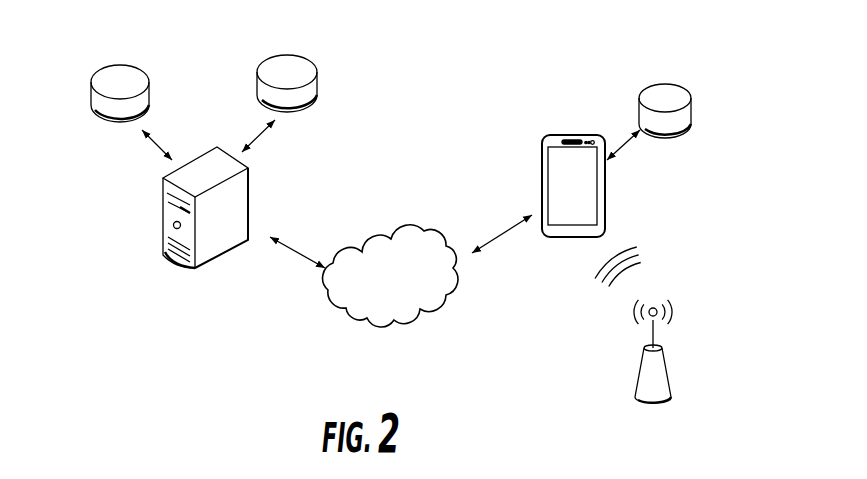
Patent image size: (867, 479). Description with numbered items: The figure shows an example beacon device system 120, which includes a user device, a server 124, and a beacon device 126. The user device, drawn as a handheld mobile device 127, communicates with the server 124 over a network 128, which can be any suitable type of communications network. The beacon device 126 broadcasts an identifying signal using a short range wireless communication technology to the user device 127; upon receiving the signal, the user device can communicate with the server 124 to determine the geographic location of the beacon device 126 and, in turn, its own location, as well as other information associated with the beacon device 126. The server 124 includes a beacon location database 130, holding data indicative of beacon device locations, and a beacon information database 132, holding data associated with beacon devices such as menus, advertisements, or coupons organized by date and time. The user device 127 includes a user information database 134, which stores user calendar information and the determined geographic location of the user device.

The beacon device system 120 is at (456, 57).
The server 124 is at (250, 192).
The beacon device 126 is at (667, 365).
The mobile device 127 is at (542, 172).
The network 128 is at (398, 324).
The beacon location database 130 is at (97, 72).
The beacon information database 132 is at (287, 54).
The user information database 134 is at (682, 88).